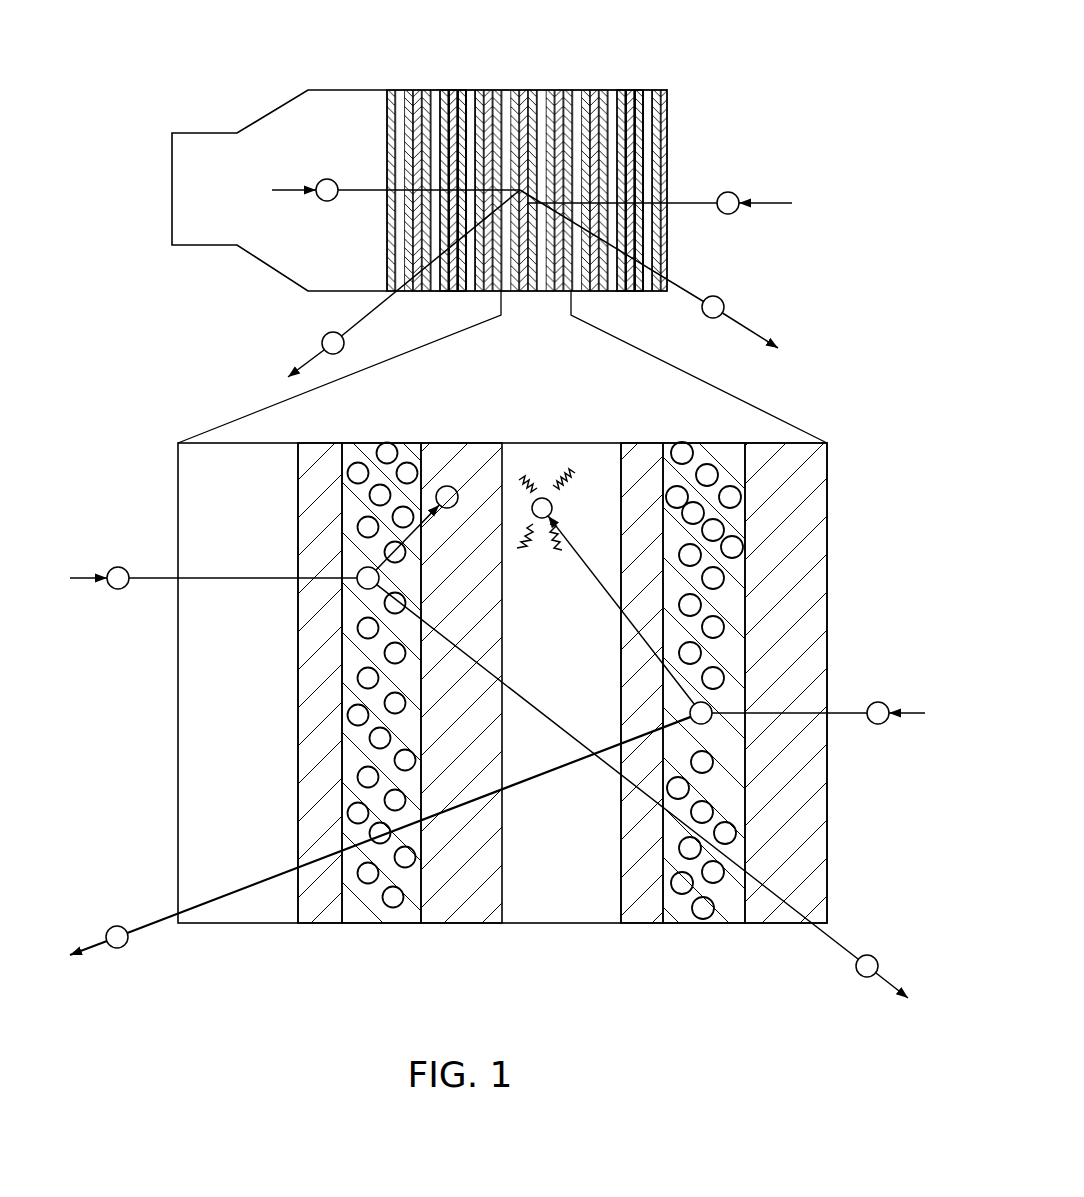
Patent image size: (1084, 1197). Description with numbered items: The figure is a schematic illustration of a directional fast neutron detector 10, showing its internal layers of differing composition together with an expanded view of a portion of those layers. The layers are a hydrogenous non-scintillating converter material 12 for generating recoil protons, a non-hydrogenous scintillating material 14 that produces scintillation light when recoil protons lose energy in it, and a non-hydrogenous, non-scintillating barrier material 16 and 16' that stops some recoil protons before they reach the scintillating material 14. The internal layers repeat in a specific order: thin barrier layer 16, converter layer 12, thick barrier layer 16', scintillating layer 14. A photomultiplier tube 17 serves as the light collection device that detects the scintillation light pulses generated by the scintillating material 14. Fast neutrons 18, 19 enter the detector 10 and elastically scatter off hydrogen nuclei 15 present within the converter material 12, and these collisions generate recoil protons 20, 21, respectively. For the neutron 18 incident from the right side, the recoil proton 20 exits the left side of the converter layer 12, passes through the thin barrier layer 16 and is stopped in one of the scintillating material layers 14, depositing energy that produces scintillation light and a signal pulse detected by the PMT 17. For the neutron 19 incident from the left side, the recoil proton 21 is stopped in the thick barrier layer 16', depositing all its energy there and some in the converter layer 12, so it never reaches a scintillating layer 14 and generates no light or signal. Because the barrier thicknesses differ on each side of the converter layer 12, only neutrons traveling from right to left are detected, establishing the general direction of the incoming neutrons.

The directional fast neutron detector 10 is at (714, 101).
The hydrogenous non-scintillating converter material 12 is at (453, 88).
The non-hydrogenous scintillating material 14 is at (474, 88).
The hydrogen nuclei 15 is at (388, 443).
The thin barrier layer 16 is at (480, 498).
The thick barrier layer 16' is at (624, 493).
The photomultiplier tube 17 is at (232, 158).
The fast neutron 18 is at (731, 192).
The fast neutron 19 is at (327, 178).
The recoil proton 20 is at (545, 498).
The recoil proton 21 is at (357, 573).